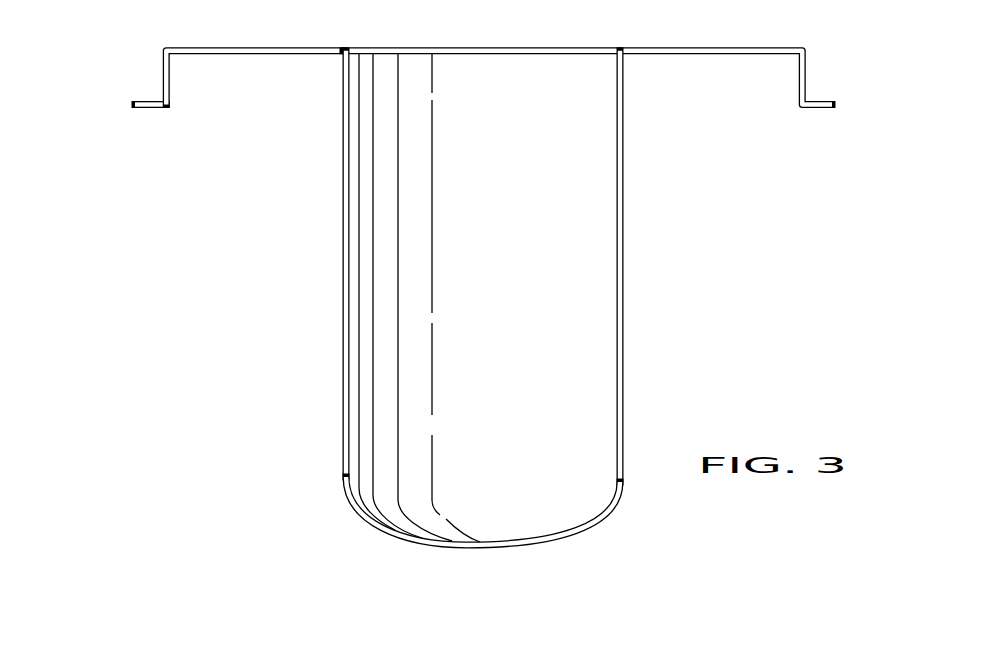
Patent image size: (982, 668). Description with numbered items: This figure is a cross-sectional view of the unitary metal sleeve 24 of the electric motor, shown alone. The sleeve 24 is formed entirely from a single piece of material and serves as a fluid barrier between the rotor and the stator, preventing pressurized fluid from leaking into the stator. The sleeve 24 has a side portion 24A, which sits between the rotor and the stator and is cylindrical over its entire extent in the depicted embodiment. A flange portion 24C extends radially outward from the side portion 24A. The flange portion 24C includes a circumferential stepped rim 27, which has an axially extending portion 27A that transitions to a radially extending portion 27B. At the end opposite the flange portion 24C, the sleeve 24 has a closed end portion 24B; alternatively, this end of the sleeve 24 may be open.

The unitary metal sleeve 24 is at (453, 297).
The side portion 24A is at (337, 62).
The closed end portion 24B is at (458, 549).
The flange portion 24C is at (242, 47).
The circumferential stepped rim 27 is at (195, 97).
The axially extending portion 27A is at (170, 81).
The radially extending portion 27B is at (145, 110).